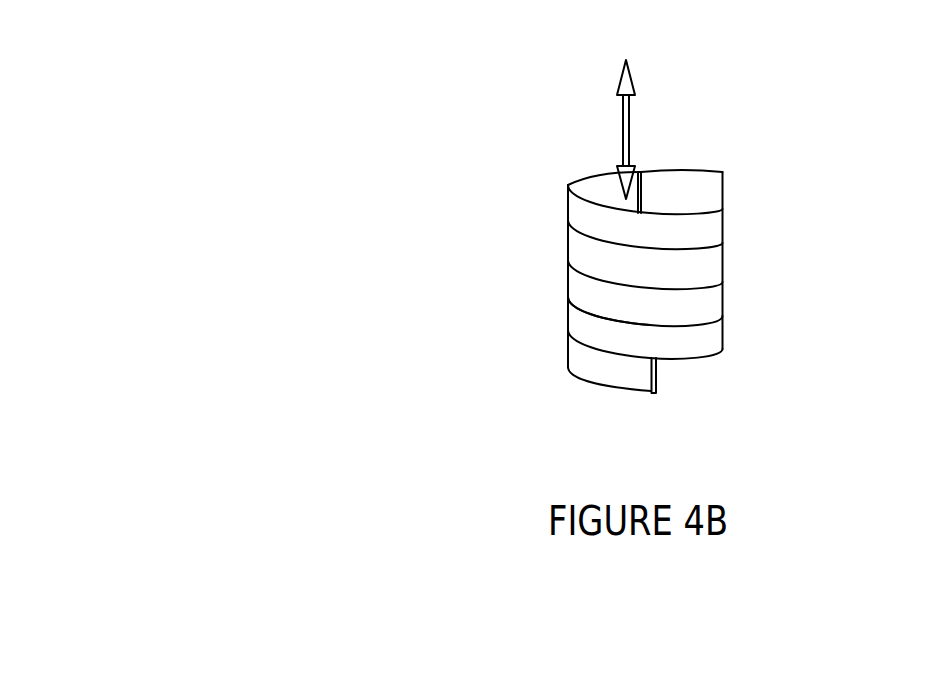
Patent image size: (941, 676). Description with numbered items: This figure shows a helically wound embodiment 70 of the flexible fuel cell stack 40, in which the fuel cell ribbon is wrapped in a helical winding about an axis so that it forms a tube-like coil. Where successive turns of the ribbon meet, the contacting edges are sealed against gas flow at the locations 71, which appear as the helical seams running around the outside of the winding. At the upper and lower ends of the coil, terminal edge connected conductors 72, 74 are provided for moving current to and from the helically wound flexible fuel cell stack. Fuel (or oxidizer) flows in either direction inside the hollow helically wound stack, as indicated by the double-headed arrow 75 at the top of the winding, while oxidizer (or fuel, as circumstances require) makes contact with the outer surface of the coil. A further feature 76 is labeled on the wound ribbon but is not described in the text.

The fuel cell stack 40 is at (588, 293).
The helically wound embodiment 70 is at (713, 108).
The sealed contacting edge locations 71 is at (610, 349).
The terminal edge connected conductor 72 is at (641, 175).
The terminal edge connected conductor 74 is at (657, 395).
The fuel flow arrow 75 is at (622, 152).
The helical gap 76 is at (610, 328).